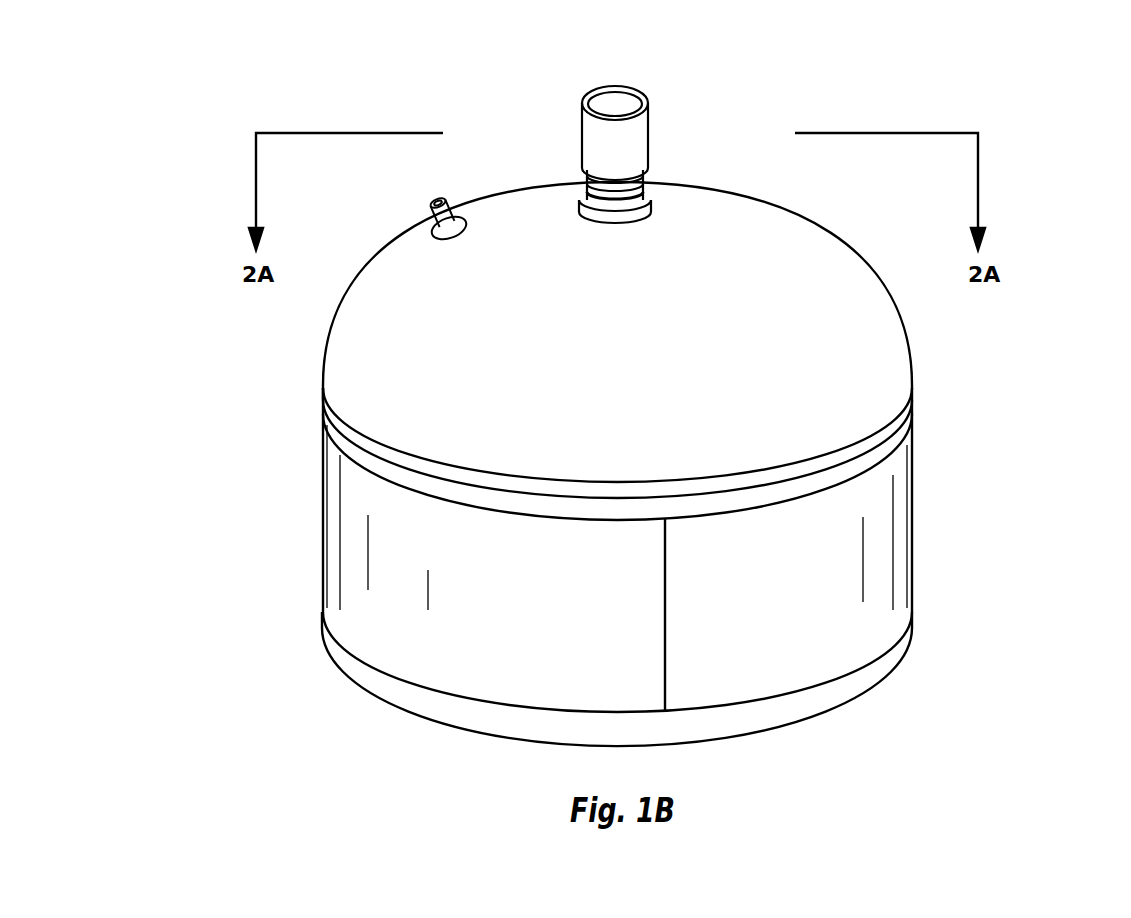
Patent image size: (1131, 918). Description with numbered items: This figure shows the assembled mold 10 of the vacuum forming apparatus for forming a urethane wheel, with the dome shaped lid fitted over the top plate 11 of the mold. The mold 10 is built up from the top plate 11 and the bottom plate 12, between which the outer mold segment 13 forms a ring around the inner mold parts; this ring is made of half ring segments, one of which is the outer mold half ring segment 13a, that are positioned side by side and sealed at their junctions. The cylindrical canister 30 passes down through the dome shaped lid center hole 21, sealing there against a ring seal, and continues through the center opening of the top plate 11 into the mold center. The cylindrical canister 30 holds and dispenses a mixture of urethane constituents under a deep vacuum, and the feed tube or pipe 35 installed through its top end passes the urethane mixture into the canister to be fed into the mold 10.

The mold 10 is at (968, 440).
The top plate 11 is at (849, 466).
The bottom plate 12 is at (435, 705).
The outer mold segment 13 is at (415, 640).
The outer mold half ring segment 13a is at (387, 355).
The dome shaped lid center hole 21 is at (638, 222).
The cylindrical canister 30 is at (637, 205).
The feed tube or pipe 35 is at (637, 133).